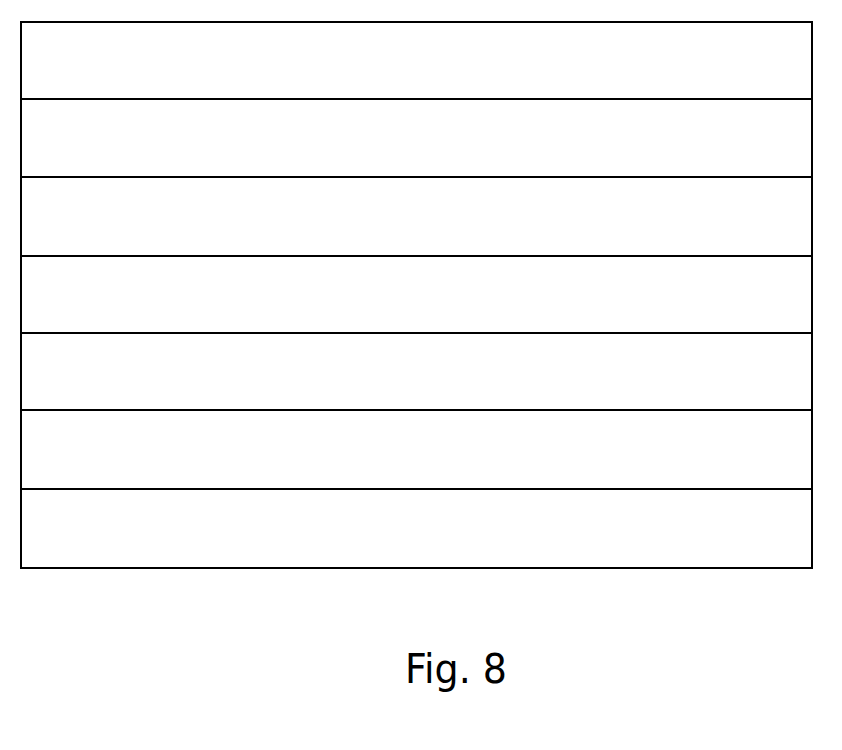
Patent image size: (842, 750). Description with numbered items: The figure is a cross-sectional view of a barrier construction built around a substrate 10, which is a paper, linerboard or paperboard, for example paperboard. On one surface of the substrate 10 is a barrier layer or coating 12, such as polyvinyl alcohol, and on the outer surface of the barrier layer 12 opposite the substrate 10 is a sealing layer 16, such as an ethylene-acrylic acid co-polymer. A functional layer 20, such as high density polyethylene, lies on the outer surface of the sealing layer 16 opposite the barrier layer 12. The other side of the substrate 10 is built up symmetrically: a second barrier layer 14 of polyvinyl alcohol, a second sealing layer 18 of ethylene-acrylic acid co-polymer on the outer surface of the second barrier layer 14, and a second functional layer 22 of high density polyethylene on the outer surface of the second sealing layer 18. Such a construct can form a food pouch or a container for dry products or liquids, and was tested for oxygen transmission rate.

The second functional layer 22 is at (416, 60).
The second sealing layer 18 is at (416, 138).
The second barrier layer 14 is at (416, 216).
The substrate 10 is at (416, 294).
The barrier layer 12 is at (416, 371).
The sealing layer 16 is at (416, 449).
The functional layer 20 is at (416, 528).